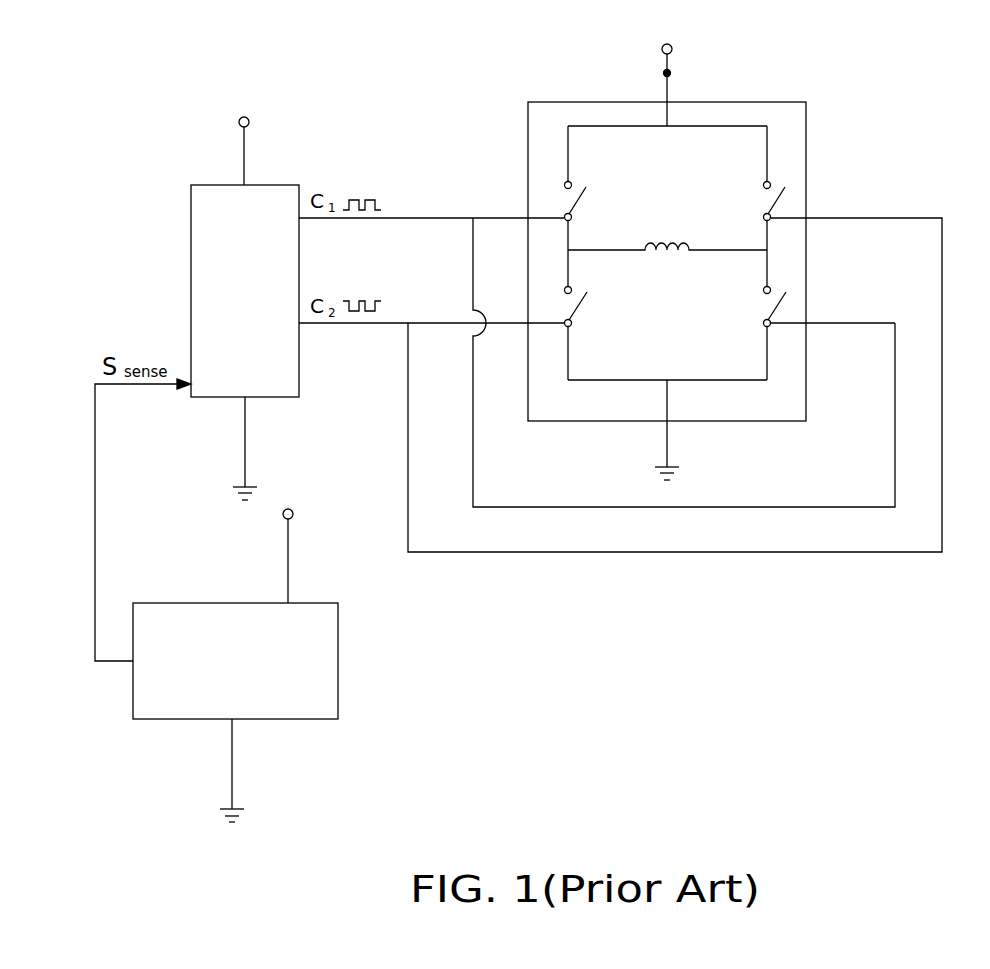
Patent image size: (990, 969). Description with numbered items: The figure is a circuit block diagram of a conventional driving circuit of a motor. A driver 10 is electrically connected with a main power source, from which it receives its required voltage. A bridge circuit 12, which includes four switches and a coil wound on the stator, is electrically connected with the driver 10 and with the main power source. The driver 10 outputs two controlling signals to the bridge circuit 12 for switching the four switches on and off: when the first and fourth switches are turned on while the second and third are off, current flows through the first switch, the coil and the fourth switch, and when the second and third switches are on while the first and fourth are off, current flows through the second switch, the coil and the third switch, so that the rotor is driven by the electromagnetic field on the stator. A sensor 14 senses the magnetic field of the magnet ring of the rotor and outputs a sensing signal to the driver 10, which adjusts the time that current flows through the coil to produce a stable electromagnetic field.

The driver 10 is at (191, 256).
The bridge circuit 12 is at (806, 130).
The sensor 14 is at (133, 689).